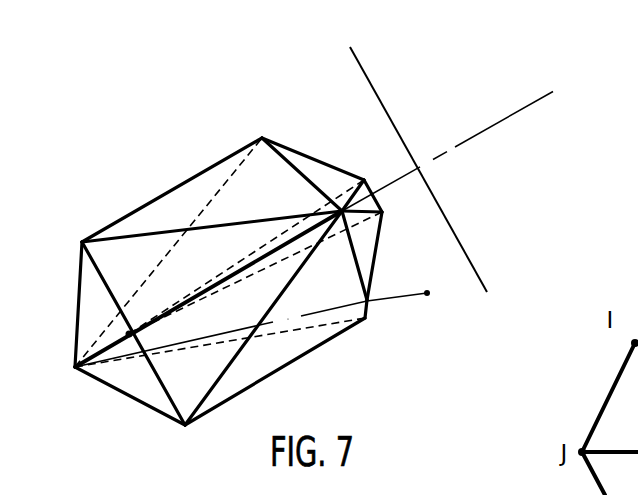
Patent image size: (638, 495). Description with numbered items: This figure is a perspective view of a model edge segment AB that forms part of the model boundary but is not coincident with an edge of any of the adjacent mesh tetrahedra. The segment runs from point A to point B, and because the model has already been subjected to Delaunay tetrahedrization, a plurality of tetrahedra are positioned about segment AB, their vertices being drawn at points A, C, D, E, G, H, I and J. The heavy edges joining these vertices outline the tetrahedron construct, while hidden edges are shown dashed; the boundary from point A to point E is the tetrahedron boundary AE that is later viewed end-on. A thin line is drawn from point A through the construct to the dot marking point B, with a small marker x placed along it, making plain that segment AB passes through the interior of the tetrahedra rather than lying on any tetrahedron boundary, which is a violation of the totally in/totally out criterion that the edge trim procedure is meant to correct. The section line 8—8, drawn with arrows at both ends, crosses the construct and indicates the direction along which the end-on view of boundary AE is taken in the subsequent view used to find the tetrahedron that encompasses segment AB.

The line 8— 8 is at (357, 58).
The point A is at (239, 337).
The point B is at (439, 293).
The point C is at (134, 415).
The point D is at (234, 362).
The point E is at (314, 259).
The point G is at (268, 267).
The point H is at (255, 242).
The point I is at (219, 238).
The point J is at (205, 281).
The point x is at (288, 322).